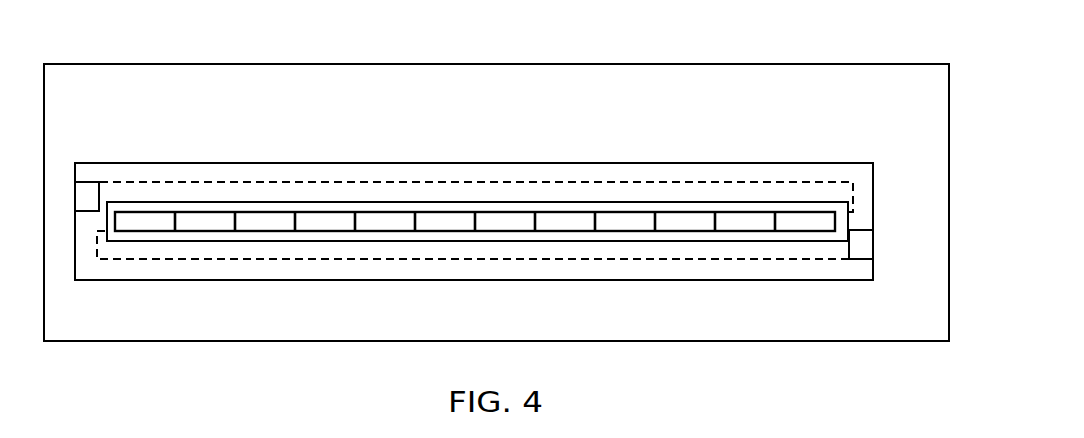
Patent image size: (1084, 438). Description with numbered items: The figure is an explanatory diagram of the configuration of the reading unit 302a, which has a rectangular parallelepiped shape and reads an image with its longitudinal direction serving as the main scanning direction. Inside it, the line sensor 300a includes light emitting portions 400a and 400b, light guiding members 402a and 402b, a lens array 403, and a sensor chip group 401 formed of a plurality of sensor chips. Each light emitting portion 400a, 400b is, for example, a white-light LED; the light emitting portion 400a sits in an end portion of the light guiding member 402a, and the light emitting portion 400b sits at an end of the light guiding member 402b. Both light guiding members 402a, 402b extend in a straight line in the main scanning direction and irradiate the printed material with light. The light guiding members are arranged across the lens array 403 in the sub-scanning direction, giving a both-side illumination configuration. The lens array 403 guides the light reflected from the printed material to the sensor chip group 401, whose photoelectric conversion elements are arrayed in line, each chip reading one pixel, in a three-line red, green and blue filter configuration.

The reading unit 302a is at (848, 64).
The line sensor 300a is at (747, 163).
The light emitting portion 400a is at (88, 182).
The light emitting portion 400b is at (874, 248).
The sensor chip group 401 is at (162, 220).
The light guiding member 402a is at (507, 183).
The light guiding member 402b is at (520, 260).
The lens array 403 is at (597, 202).